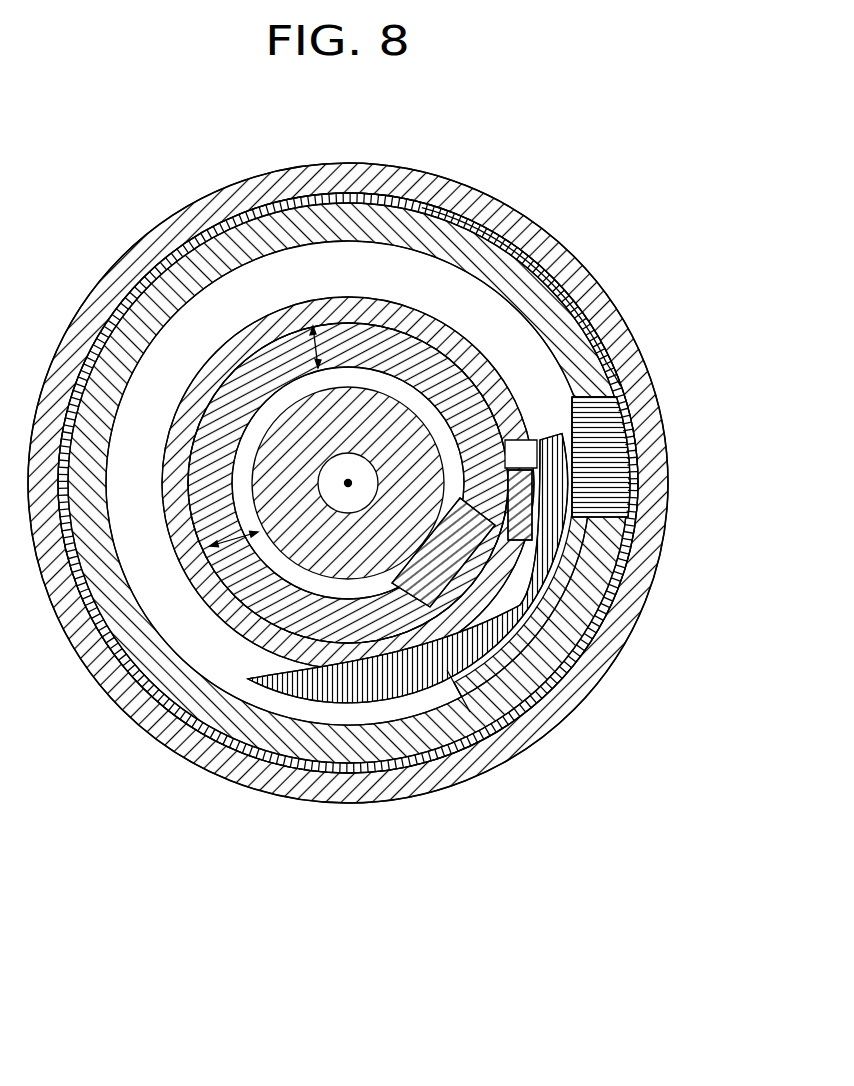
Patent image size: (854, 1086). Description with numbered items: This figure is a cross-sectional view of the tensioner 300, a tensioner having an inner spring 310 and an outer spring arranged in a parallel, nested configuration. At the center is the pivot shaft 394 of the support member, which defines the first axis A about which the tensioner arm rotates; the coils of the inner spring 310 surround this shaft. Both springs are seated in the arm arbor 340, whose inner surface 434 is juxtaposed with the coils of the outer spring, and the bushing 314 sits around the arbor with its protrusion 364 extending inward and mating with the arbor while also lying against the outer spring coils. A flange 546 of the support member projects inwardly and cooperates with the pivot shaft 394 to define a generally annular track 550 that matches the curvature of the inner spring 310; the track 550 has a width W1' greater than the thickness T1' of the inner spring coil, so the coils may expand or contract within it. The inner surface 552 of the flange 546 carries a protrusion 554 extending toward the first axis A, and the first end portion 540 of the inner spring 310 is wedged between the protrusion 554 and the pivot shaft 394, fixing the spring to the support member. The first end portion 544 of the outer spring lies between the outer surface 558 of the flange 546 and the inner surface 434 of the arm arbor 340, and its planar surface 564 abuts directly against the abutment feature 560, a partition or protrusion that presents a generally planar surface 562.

The tensioner 300 is at (550, 864).
The inner spring 310 is at (403, 340).
The bushing 314 is at (225, 232).
The arm arbor 340 is at (500, 700).
The protrusion 364 is at (612, 438).
The pivot shaft 394 is at (445, 545).
The inner surface 434 is at (434, 710).
The first end portion 540 is at (548, 567).
The first end portion 544 is at (556, 462).
The flange 546 is at (520, 347).
The track 550 is at (255, 608).
The inner surface 552 is at (200, 705).
The protrusion 554 is at (575, 630).
The outer surface 558 is at (252, 428).
The abutment feature 560 is at (598, 357).
The planar surface 562 is at (520, 430).
The planar surface 564 is at (615, 405).
The first axis A is at (350, 480).
The thickness T1' is at (294, 351).
The width W1' is at (198, 563).